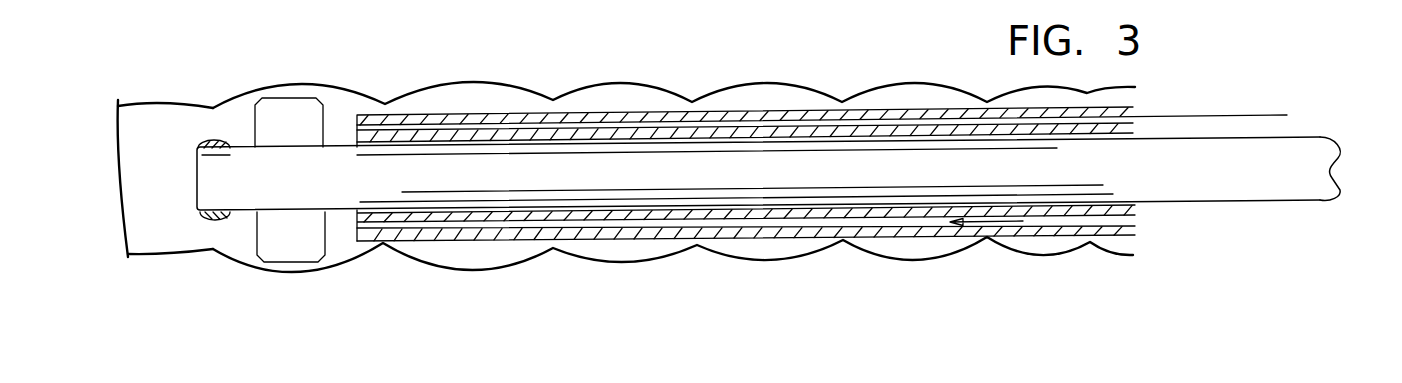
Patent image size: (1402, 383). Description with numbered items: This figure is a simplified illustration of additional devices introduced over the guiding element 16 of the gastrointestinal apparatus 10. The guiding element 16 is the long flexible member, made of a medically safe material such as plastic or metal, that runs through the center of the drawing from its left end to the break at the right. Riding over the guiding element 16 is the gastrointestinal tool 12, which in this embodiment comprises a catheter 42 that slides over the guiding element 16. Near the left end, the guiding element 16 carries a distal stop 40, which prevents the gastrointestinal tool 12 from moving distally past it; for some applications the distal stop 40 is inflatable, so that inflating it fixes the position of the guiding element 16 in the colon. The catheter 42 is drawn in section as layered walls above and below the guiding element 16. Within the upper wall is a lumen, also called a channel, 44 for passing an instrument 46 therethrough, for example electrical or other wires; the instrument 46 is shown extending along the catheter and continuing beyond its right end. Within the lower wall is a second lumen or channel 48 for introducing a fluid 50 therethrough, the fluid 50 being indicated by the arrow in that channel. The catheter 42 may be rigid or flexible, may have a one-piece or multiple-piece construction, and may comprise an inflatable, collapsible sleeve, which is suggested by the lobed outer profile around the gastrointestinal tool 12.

The gastrointestinal apparatus 10 is at (1161, 72).
The gastrointestinal tool 12 is at (290, 113).
The guiding element 16 is at (573, 150).
The distal stop 40 is at (212, 220).
The catheter 42 is at (909, 108).
The lumen 44 is at (802, 119).
The instrument 46 is at (742, 120).
The lumen 48 is at (880, 222).
The fluid 50 is at (1018, 223).